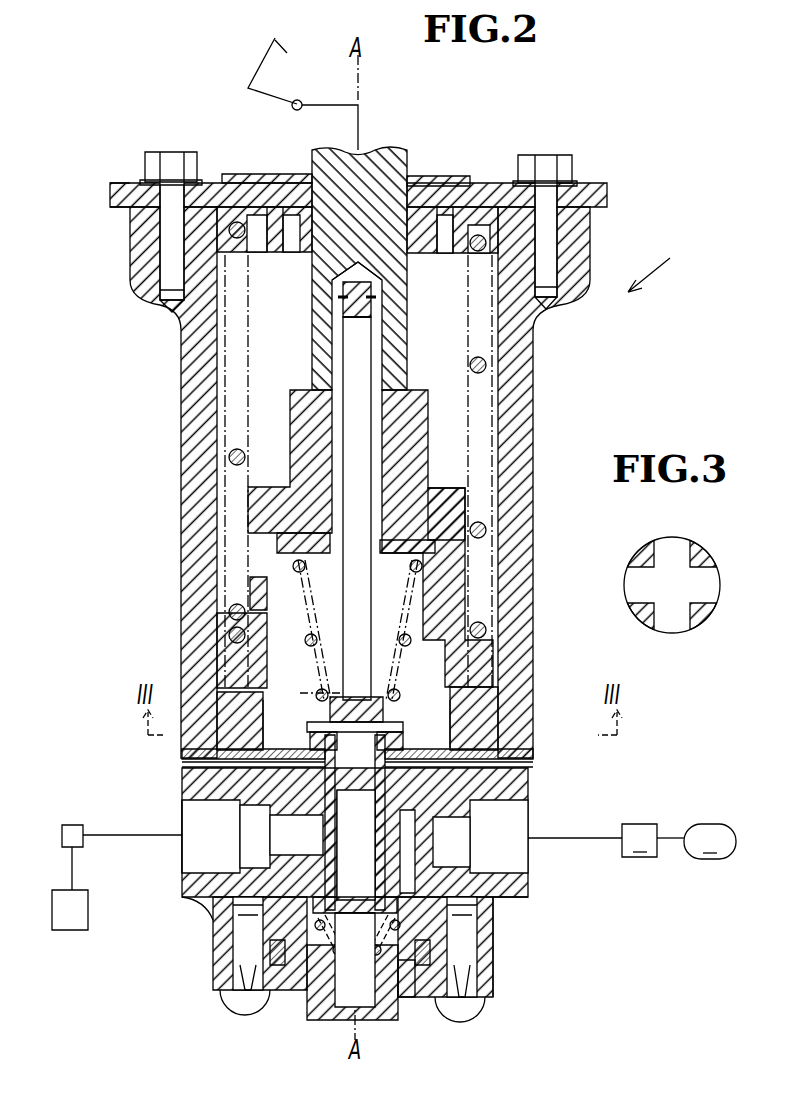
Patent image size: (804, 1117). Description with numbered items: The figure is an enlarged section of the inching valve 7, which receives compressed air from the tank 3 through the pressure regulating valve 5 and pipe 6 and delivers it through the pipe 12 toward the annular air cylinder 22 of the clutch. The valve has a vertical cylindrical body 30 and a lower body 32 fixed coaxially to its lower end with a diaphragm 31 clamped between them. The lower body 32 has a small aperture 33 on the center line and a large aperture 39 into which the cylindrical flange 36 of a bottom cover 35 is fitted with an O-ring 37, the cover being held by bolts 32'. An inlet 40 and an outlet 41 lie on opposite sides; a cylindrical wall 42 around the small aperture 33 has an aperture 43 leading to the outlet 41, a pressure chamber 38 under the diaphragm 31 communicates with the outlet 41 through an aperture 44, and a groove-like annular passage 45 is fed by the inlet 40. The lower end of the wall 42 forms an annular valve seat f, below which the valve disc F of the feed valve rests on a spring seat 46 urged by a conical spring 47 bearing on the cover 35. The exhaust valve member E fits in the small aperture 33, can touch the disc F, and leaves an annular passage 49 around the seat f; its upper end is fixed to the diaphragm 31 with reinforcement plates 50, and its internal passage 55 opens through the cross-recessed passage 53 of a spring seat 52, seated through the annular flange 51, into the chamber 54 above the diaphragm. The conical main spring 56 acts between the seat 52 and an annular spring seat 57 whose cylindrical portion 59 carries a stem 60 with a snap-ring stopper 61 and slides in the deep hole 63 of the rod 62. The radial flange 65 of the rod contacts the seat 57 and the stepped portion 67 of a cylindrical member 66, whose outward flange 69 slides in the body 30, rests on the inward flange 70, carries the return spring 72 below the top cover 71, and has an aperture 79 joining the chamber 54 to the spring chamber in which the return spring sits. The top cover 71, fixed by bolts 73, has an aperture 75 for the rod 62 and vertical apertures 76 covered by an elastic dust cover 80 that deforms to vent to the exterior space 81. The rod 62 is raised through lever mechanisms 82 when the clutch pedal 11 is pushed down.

In FIG. 2, the clutch pedal 11 is at (262, 52).
In FIG. 2, the lever mechanisms 82 is at (318, 105).
In FIG. 2, the exterior space 81 is at (193, 118).
In FIG. 2, the bolts 73 is at (145, 170).
In FIG. 2, the top cover 71 is at (240, 205).
In FIG. 2, the elastic dust cover 80 is at (278, 176).
In FIG. 2, the rod 62 is at (407, 150).
In FIG. 2, the aperture 75 is at (392, 230).
In FIG. 2, the vertical apertures 76 is at (272, 252).
In FIG. 2, the inching valve 7 is at (675, 261).
In FIG. 2, the stopper 61 is at (373, 297).
In FIG. 2, the deep hole 63 is at (371, 318).
In FIG. 2, the stem 60 is at (371, 370).
In FIG. 2, the cylindrical portion 59 is at (428, 418).
In FIG. 2, the cylindrical member 66 is at (295, 440).
In FIG. 2, the radial flange 65 is at (435, 500).
In FIG. 2, the return spring 72 is at (229, 458).
In FIG. 2, the body 30 is at (181, 495).
In FIG. 2, the annular stepped portion 67 is at (277, 543).
In FIG. 2, the aperture 79 is at (250, 590).
In FIG. 2, the annular spring seat 57 is at (312, 560).
In FIG. 2, the main spring 56 is at (406, 612).
In FIG. 2, the chamber 54 is at (270, 648).
In FIG. 2, the radially outward flange 69 is at (240, 650).
In FIG. 2, the radially inward flange 70 is at (240, 700).
In FIG. 2, the cross-recessed passage 53 is at (320, 697).
In FIG. 3, the cross-recessed passage 53 is at (705, 585).
In FIG. 2, the spring seat 52 is at (400, 705).
In FIG. 3, the spring seat 52 is at (700, 545).
In FIG. 2, the diaphragm 31 is at (275, 750).
In FIG. 2, the annular flange 51 is at (403, 727).
In FIG. 2, the passage 55 is at (343, 789).
In FIG. 2, the reinforcement plates 50 is at (533, 765).
In FIG. 2, the pipe 12 is at (110, 835).
In FIG. 2, the outlet 41 is at (200, 828).
In FIG. 2, the pressure chamber 38 is at (262, 815).
In FIG. 2, the inlet 40 is at (525, 815).
In FIG. 2, the pipe 6 is at (600, 838).
In FIG. 2, the pressure regulating valve 5 is at (639, 840).
In FIG. 2, the tank 3 is at (710, 841).
In FIG. 2, the aperture 44 is at (240, 845).
In FIG. 2, the aperture 43 is at (285, 832).
In FIG. 2, the annular passage 49 is at (328, 878).
In FIG. 2, the small aperture 33 is at (382, 830).
In FIG. 2, the cylindrical wall 42 is at (385, 860).
In FIG. 2, the annular passage 45 is at (455, 857).
In FIG. 2, the annular valve seat f is at (195, 900).
In FIG. 2, the lower body 32 is at (329, 947).
In FIG. 2, the large aperture 39 is at (493, 910).
In FIG. 2, the cylindrical flange 36 is at (410, 935).
In FIG. 2, the spring seat 46 is at (270, 950).
In FIG. 2, the conical spring 47 is at (320, 960).
In FIG. 2, the bottom cover 35 is at (318, 1020).
In FIG. 2, the O-ring 37 is at (405, 997).
In FIG. 2, the bolts 32' is at (345, 980).
In FIG. 2, the annular air cylinder 22 is at (68, 930).
In FIG. 2, the valve member E is at (356, 845).
In FIG. 2, the valve disc F is at (355, 944).